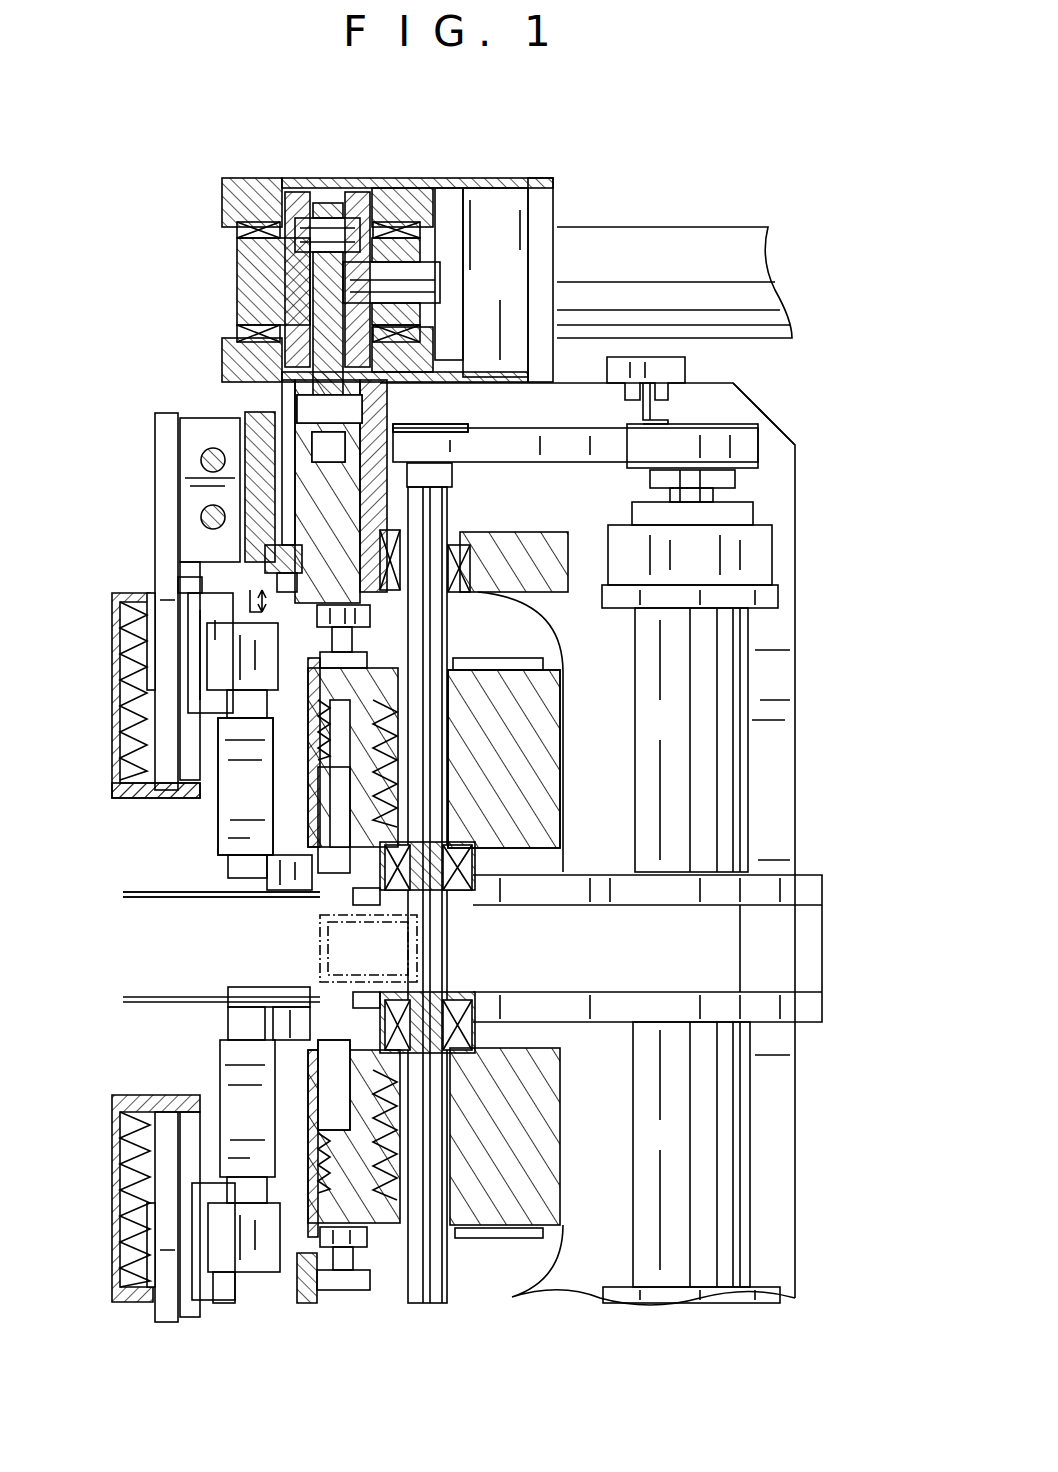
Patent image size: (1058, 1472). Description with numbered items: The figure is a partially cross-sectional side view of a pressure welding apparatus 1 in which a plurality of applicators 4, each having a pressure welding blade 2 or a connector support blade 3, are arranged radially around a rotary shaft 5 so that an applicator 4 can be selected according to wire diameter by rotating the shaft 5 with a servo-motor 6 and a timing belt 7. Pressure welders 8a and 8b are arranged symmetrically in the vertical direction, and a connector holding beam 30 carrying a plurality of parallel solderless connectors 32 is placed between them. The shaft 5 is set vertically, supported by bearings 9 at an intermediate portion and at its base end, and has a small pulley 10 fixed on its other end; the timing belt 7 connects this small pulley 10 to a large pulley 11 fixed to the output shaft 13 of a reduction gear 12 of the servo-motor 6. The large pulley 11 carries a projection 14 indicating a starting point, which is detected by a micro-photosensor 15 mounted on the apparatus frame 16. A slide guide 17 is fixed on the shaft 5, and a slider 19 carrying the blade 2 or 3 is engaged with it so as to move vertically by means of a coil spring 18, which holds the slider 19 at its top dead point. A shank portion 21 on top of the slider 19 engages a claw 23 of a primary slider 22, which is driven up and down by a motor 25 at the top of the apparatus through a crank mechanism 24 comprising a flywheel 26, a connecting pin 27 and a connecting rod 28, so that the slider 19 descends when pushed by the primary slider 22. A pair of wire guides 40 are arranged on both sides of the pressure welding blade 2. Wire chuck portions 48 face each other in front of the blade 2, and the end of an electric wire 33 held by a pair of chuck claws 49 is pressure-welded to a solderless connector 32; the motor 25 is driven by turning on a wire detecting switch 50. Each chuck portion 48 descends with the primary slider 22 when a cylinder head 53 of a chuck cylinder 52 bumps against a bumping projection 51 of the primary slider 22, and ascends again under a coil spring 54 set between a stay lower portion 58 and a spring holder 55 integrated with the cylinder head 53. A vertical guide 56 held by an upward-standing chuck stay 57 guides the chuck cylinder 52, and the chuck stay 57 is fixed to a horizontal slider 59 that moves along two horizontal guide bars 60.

The pressure welding apparatus 1 is at (728, 183).
The pressure welding blade 2 is at (320, 865).
The support blade 3 is at (300, 1072).
The applicator 4 is at (300, 785).
The rotary shaft 5 is at (450, 735).
The servo-motor 6 is at (735, 672).
The timing belt 7 is at (525, 462).
The pressure welder 8a is at (203, 367).
The pressure welder 8b is at (104, 1175).
The bearing 9 is at (468, 548).
The small pulley 10 is at (445, 420).
The large pulley 11 is at (740, 425).
The reduction gear 12 is at (758, 548).
The output shaft 13 is at (670, 492).
The projection 14 is at (643, 410).
The micro-photosensor 15 is at (680, 380).
The apparatus frame 16 is at (745, 388).
The slide guide 17 is at (448, 803).
The coil spring 18 is at (330, 756).
The slider 19 is at (310, 668).
The shank portion 21 is at (370, 615).
The primary slider 22 is at (258, 440).
The claw 23 is at (352, 640).
The crank mechanism 24 is at (200, 286).
The motor 25 is at (648, 238).
The flywheel 26 is at (297, 200).
The connecting pin 27 is at (295, 232).
The connecting rod 28 is at (315, 318).
The connector holding beam 30 is at (417, 940).
The solderless connector 32 is at (408, 965).
The electric wire 33 is at (135, 997).
The wire guide 40 is at (300, 868).
The wire chuck portion 48 is at (208, 835).
The chuck claw 49 is at (245, 900).
The wire detecting switch 50 is at (355, 900).
The bumping projection 51 is at (258, 575).
The chuck cylinder 52 is at (212, 790).
The cylinder head 53 is at (195, 600).
The coil spring 54 is at (120, 718).
The spring holder 55 is at (112, 608).
The vertical guide 56 is at (188, 585).
The chuck stay 57 is at (160, 518).
The stay lower portion 58 is at (125, 798).
The horizontal slider 59 is at (178, 433).
The horizontal guide bar 60 is at (200, 515).